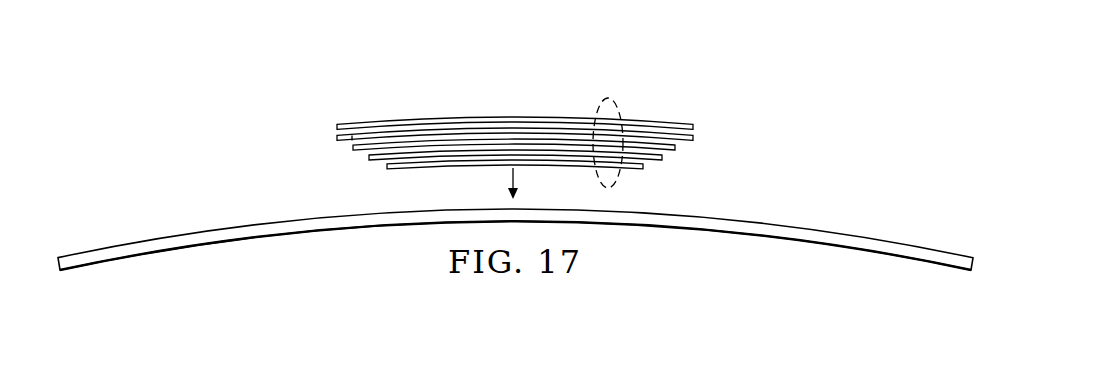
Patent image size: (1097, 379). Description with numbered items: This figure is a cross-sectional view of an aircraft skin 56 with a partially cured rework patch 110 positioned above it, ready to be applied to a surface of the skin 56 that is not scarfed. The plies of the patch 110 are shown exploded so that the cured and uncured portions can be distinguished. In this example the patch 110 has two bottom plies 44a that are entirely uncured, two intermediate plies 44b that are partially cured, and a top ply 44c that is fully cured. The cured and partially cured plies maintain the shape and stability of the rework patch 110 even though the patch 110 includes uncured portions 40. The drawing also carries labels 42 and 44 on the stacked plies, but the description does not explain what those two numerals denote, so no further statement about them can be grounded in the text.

The uncured portions 40 is at (408, 127).
The ply 42 is at (342, 143).
The ply bundle 44 is at (610, 102).
The bottom plies 44a is at (400, 173).
The intermediate plies 44b is at (587, 137).
The top ply 44c is at (487, 117).
The skin 56 is at (913, 247).
The partially cured rework patch 110 is at (732, 59).